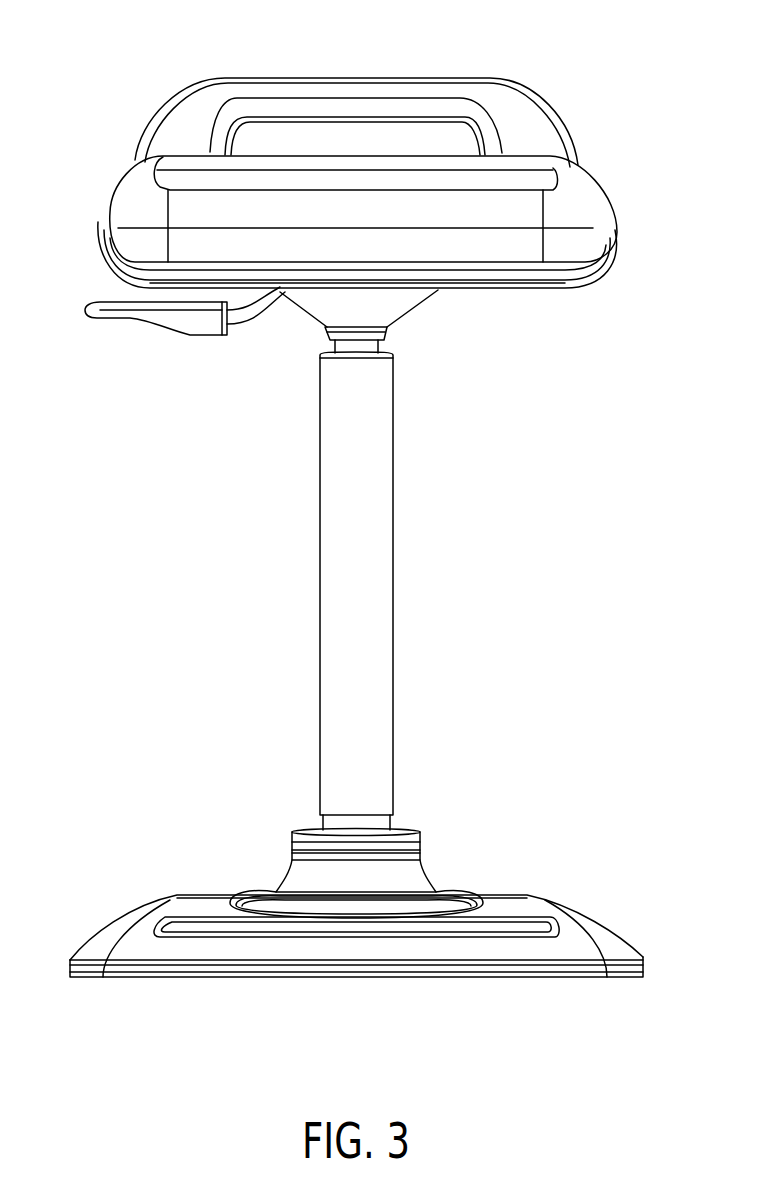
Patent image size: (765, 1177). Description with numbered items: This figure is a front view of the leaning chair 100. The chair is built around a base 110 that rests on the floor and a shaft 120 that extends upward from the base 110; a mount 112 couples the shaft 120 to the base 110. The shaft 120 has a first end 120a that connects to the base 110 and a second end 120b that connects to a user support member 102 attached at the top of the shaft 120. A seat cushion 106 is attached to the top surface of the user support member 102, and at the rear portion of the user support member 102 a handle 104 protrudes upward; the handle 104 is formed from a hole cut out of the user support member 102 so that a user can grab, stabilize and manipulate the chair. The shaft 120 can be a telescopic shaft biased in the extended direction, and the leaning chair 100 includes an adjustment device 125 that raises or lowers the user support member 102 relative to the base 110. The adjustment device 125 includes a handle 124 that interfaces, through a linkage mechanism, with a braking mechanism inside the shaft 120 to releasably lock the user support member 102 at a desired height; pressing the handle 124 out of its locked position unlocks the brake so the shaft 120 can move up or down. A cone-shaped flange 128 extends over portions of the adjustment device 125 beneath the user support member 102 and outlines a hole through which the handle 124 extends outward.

The leaning chair 100 is at (123, 591).
The user support member 102 is at (585, 263).
The handle 104 is at (431, 94).
The seat cushion 106 is at (127, 192).
The base 110 is at (562, 923).
The mount 112 is at (417, 882).
The shaft 120 is at (383, 575).
The first end 120a is at (416, 808).
The second end 120b is at (419, 377).
The handle 124 is at (130, 318).
The adjustment device 125 is at (197, 354).
The cone-shaped flange 128 is at (390, 312).